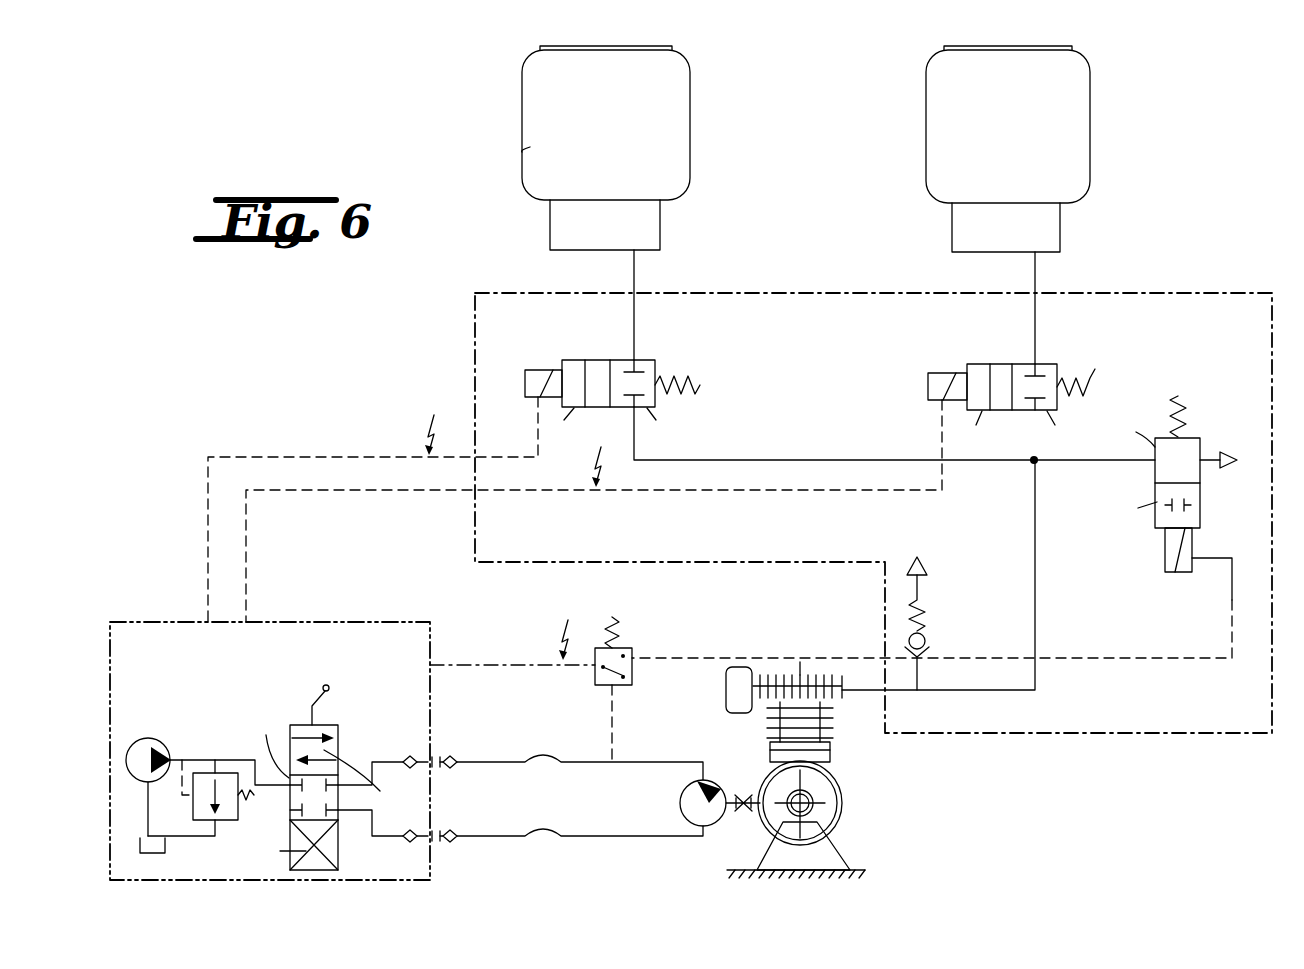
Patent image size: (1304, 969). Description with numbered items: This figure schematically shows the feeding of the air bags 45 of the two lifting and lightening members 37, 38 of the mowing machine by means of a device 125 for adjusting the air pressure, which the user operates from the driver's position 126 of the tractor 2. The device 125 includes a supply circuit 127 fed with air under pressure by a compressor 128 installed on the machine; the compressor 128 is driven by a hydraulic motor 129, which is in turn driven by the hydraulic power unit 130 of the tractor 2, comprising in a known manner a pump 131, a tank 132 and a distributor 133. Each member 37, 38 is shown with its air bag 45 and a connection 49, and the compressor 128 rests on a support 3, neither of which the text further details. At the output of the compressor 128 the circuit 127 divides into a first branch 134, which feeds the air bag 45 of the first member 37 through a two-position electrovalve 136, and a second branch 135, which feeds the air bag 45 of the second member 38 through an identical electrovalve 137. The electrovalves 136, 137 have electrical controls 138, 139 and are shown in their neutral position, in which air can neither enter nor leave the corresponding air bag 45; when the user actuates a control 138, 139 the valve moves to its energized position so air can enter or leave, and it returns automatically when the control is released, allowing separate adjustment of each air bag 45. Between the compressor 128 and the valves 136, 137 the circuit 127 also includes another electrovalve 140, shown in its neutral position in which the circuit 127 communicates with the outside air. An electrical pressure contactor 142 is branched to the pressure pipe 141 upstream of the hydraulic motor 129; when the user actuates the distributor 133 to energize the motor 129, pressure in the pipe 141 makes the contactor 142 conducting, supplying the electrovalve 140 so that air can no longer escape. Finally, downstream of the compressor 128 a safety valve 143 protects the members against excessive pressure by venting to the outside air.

The tractor 2 is at (396, 614).
The vehicle frame / ground 3 is at (872, 848).
The first lifting and lightening member 37 is at (520, 84).
The second lifting and lightening member 38 is at (1092, 92).
The air bag 45 is at (530, 147).
The accumulator connection line 49 is at (636, 251).
The device for adjusting the pressure 125 is at (1192, 292).
The driver's position 126 is at (160, 622).
The supply circuit 127 is at (1036, 593).
The compressor 128 is at (825, 762).
The hydraulic motor 129 is at (680, 806).
The hydraulic power unit 130 is at (350, 845).
The pump 131 is at (158, 744).
The tank 132 is at (166, 851).
The distributor 133 is at (339, 731).
The first branch 134 is at (830, 460).
The second branch 135 is at (1030, 462).
The electrovalve 136 is at (650, 358).
The electrovalve 137 is at (1048, 360).
The electrical control 138 is at (238, 457).
The electrical control 139 is at (396, 491).
The electrovalve 140 is at (1198, 438).
The pressure pipe 141 is at (665, 762).
The electrical pressure contactor 142 is at (631, 650).
The safety valve 143 is at (926, 639).